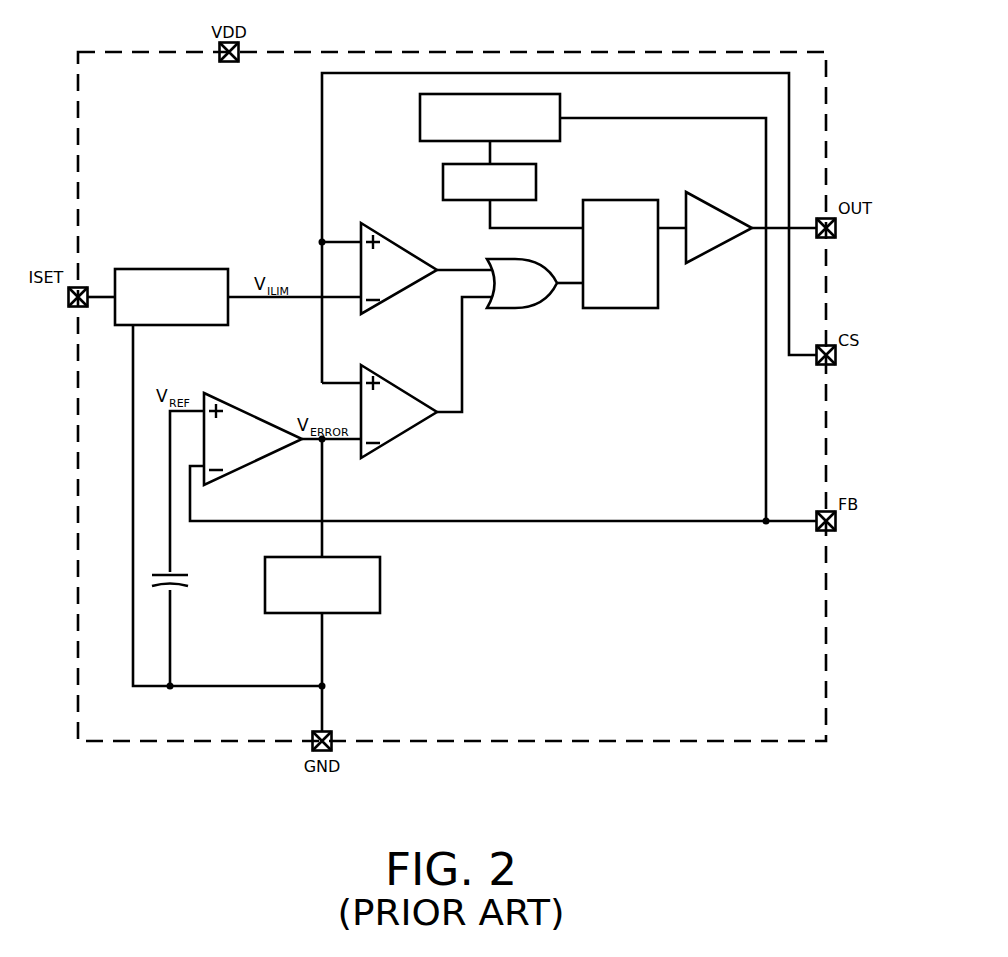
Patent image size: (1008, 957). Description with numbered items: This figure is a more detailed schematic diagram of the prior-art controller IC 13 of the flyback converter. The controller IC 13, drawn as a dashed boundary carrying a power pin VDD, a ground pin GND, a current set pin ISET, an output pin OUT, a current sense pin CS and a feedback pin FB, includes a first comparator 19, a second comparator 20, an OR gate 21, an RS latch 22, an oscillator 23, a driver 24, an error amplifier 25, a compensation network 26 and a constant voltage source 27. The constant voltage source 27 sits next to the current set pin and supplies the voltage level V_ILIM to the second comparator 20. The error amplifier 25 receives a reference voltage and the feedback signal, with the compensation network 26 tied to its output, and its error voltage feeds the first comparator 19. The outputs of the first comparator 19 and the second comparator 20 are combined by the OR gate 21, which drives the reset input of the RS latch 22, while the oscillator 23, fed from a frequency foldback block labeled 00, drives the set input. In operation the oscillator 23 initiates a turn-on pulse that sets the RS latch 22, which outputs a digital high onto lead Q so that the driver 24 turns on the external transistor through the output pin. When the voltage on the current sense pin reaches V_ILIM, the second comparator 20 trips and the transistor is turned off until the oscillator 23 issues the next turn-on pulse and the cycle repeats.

The controller IC 13 is at (678, 52).
The frequency foldback circuit 00 is at (420, 118).
The oscillator 23 is at (536, 183).
The second comparator 20 is at (397, 244).
The first comparator 19 is at (398, 385).
The OR gate 21 is at (522, 283).
The RS latch 22 is at (620, 254).
The driver 24 is at (719, 227).
The error amplifier 25 is at (243, 411).
The compensation network 26 is at (380, 582).
The constant voltage source 27 is at (170, 269).